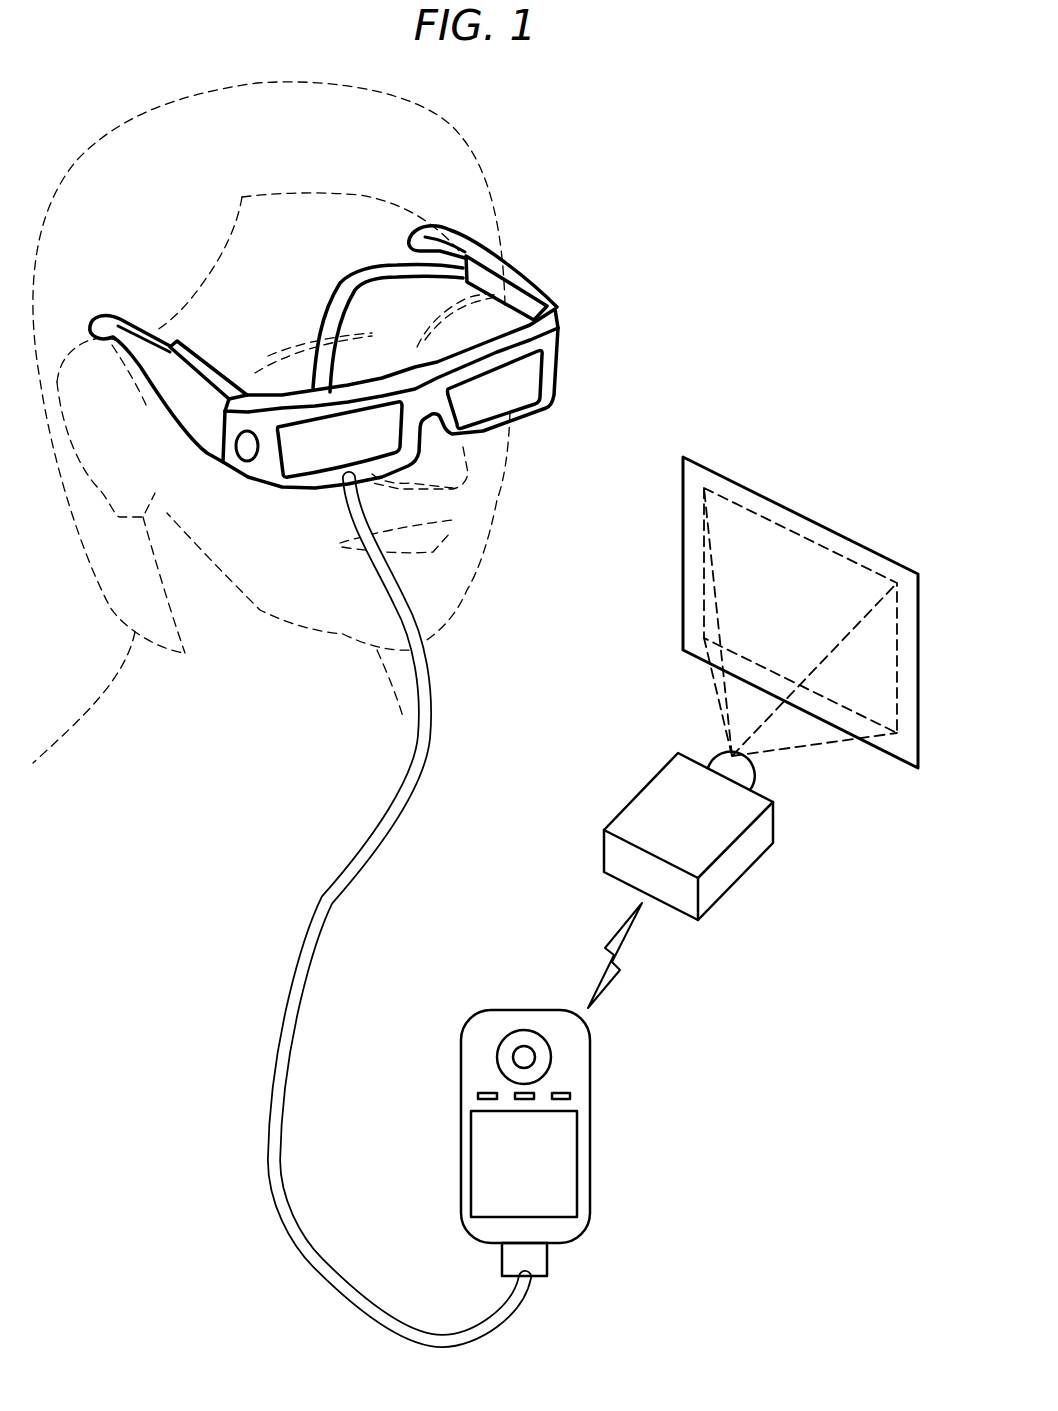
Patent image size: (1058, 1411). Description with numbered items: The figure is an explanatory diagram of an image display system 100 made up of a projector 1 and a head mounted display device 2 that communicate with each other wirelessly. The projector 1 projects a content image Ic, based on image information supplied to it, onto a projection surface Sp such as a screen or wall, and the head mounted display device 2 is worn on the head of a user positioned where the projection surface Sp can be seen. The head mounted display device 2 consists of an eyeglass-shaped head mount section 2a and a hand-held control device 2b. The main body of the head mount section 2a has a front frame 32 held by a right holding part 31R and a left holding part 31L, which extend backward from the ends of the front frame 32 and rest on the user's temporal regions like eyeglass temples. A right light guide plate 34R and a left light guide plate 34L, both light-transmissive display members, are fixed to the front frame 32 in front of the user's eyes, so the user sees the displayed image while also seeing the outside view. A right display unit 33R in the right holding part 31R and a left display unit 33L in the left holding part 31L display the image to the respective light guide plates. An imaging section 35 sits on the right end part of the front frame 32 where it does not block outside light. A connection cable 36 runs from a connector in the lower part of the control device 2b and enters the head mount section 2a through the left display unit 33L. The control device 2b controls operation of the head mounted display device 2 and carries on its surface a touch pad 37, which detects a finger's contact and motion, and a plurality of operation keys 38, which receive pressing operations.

The image display system 100 is at (690, 160).
The projector 1 is at (648, 792).
The head mounted display device 2 is at (376, 778).
The head mount section 2a is at (560, 313).
The control device 2b is at (561, 1112).
The right holding part 31R is at (105, 322).
The left holding part 31L is at (410, 243).
The front frame 32 is at (397, 378).
The right display unit 33R is at (203, 363).
The left display unit 33L is at (513, 285).
The right light guide plate 34R is at (310, 470).
The left light guide plate 34L is at (517, 400).
The imaging section 35 is at (252, 461).
The connection cable 36 is at (268, 1100).
The touch pad 37 is at (568, 1150).
The operation keys 38 is at (563, 1083).
The projection surface Sp is at (706, 480).
The content image Ic is at (780, 527).